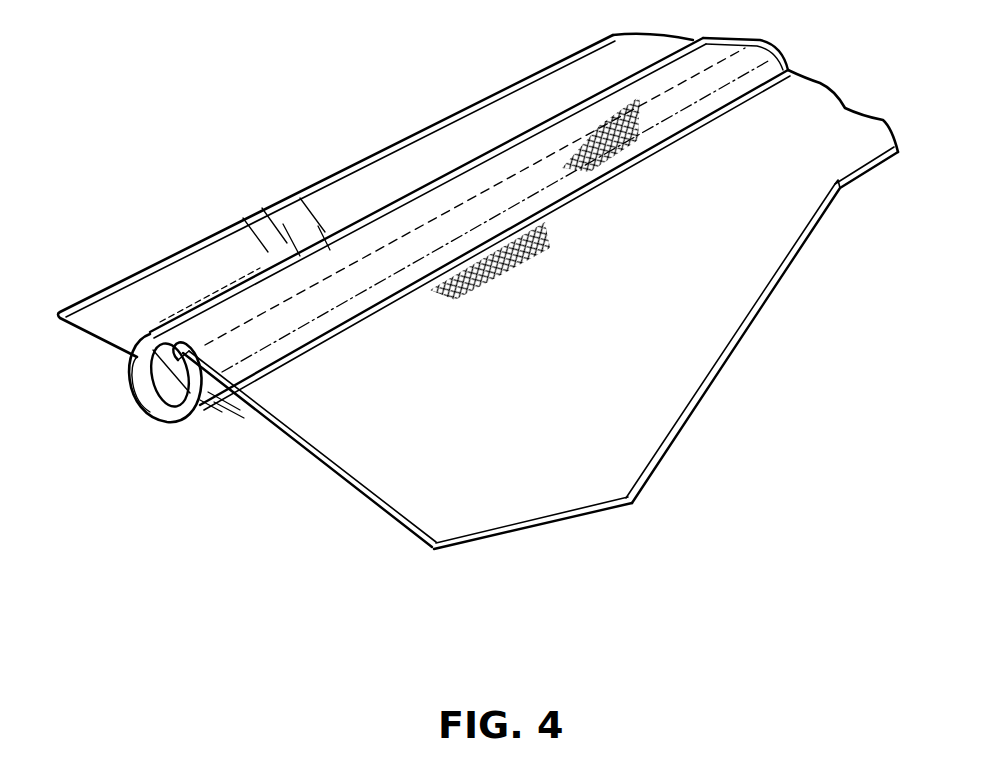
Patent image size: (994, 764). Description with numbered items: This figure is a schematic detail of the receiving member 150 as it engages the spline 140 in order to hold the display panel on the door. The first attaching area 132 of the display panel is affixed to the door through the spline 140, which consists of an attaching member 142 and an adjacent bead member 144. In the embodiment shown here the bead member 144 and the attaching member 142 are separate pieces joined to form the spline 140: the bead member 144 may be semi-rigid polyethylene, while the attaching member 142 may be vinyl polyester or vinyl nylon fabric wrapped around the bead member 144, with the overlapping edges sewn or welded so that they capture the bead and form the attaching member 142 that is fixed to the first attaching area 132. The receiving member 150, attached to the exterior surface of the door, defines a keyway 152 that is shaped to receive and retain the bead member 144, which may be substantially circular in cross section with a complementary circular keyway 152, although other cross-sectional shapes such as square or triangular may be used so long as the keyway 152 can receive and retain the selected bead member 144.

The first attaching area 132 is at (380, 423).
The spline 140 is at (400, 244).
The attaching member 142 is at (250, 327).
The bead member 144 is at (165, 382).
The receiving member 150 is at (213, 234).
The keyway 152 is at (189, 418).